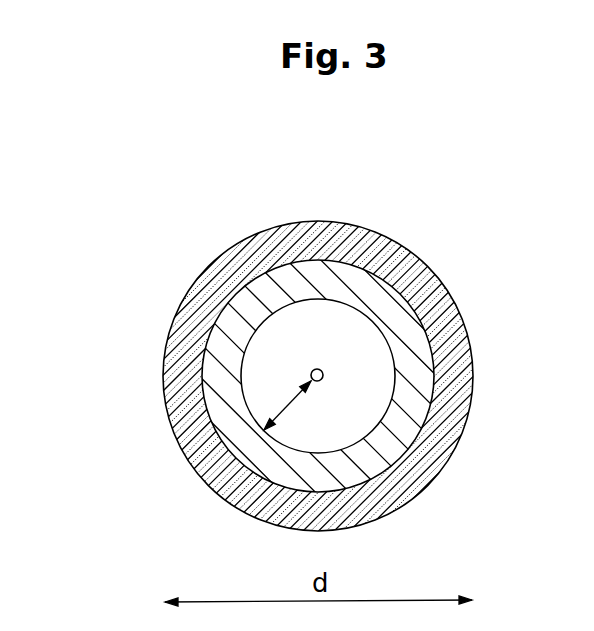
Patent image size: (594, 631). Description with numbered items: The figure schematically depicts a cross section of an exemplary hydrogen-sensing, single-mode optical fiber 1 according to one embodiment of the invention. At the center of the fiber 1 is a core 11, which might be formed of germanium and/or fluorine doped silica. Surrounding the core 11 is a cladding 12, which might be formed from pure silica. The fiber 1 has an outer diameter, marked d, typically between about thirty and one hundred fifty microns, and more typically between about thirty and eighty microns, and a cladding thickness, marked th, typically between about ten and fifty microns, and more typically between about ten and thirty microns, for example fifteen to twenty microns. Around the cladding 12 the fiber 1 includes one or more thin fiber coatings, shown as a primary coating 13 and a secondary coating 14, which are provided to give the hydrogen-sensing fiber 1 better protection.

The hydrogen-sensing single-mode fiber 1 is at (323, 376).
The core 11 is at (317, 375).
The cladding 12 is at (374, 355).
The primary coating 13 is at (207, 373).
The secondary coating 14 is at (208, 487).